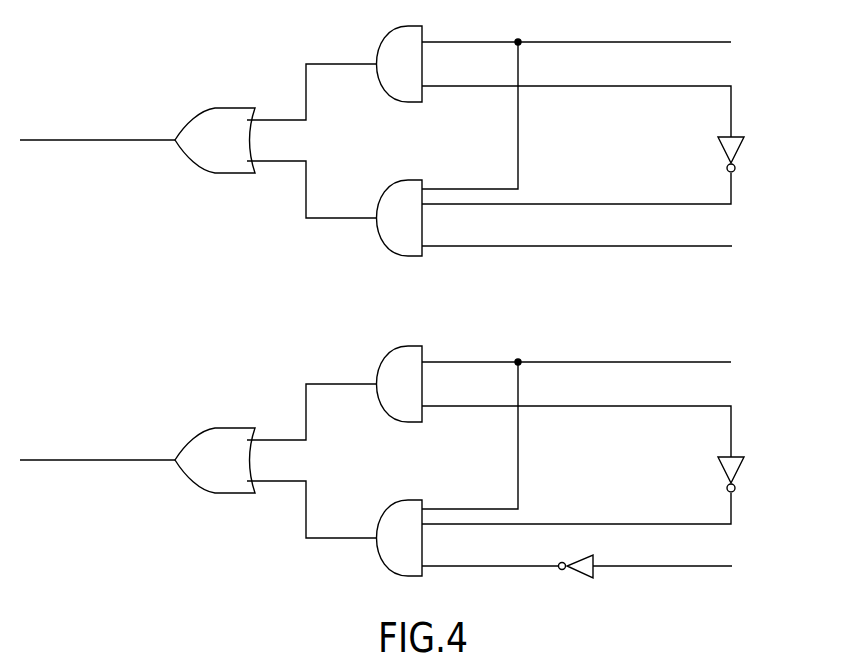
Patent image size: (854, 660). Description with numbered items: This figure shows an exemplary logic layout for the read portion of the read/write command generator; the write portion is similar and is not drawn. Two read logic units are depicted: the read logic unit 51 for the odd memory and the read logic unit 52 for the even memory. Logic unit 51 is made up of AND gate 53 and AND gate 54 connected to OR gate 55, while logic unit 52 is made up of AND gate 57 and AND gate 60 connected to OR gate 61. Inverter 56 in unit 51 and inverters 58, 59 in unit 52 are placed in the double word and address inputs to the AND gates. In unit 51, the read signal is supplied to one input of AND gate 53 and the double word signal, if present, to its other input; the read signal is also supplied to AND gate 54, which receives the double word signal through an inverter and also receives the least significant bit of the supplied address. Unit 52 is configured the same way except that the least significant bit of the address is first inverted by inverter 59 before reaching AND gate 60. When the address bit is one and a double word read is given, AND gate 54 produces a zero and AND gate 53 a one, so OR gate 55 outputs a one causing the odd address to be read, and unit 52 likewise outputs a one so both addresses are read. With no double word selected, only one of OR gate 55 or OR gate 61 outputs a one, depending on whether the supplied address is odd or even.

The read logic unit for odd memory 51 is at (394, 155).
The read logic unit for even memory 52 is at (394, 480).
The AND gate 53 is at (393, 31).
The AND gate 54 is at (393, 184).
The OR gate 55 is at (222, 107).
The inverter 56 is at (724, 150).
The AND gate 57 is at (393, 351).
The inverter 58 is at (724, 470).
The inverter 59 is at (587, 577).
The AND gate 60 is at (393, 504).
The OR gate 61 is at (222, 427).